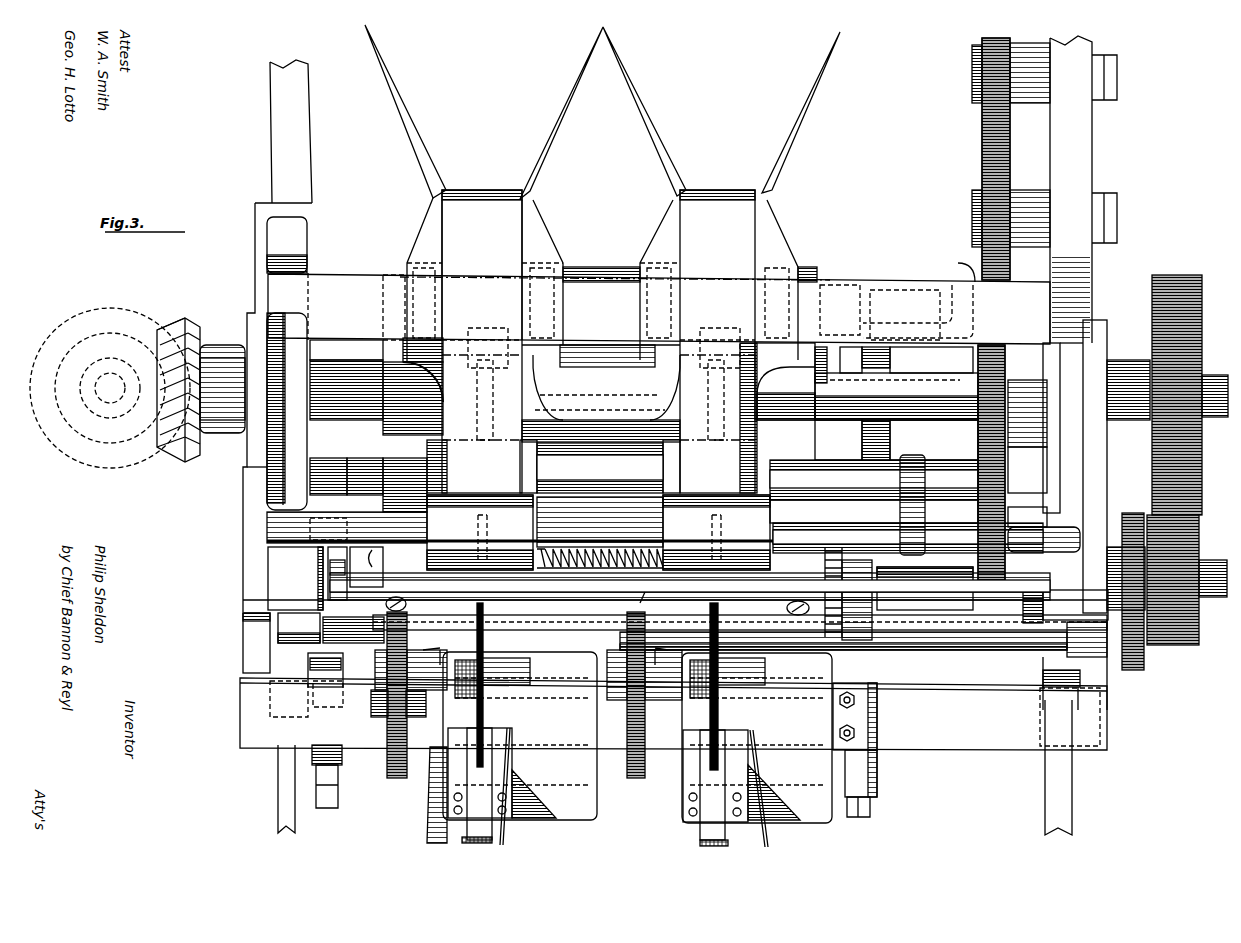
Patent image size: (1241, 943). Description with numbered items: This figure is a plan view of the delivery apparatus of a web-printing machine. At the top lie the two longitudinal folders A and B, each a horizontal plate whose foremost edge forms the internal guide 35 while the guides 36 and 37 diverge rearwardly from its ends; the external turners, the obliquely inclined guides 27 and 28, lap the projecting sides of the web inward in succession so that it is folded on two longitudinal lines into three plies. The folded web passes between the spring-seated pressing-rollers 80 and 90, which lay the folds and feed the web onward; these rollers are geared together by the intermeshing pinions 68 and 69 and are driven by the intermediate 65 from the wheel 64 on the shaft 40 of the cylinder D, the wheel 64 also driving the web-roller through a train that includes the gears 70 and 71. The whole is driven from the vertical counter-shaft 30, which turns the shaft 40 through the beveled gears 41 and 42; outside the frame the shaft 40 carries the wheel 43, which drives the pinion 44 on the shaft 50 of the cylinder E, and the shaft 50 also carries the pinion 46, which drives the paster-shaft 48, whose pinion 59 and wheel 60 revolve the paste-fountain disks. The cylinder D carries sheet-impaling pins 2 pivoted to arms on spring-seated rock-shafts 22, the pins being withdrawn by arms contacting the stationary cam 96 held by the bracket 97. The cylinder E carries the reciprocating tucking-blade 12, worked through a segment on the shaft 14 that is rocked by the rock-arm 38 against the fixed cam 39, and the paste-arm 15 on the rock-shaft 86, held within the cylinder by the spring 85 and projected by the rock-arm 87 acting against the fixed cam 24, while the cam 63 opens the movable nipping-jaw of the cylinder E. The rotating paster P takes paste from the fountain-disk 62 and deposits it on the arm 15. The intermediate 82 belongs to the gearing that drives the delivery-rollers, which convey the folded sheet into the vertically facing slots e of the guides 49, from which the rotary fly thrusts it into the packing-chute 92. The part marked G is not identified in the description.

The sheet-impaling pin 2 is at (480, 440).
The tucking-blade 12 is at (518, 600).
The shaft 14 is at (294, 650).
The paste receiving and applying arm 15 is at (487, 527).
The rock-shaft 22 is at (613, 345).
The fixed cam 24 is at (328, 558).
The guide 27 is at (531, 316).
The guide 28 is at (668, 310).
The vertical counter-shaft 30 is at (110, 388).
The guide 35 is at (482, 190).
The guide 36 is at (409, 118).
The guide 37 is at (562, 108).
The rock-arm 38 is at (444, 240).
The fixed cam 39 is at (522, 237).
The shaft 40 is at (220, 345).
The beveled gear 41 is at (100, 310).
The beveled gear 42 is at (172, 320).
The wheel 43 is at (1170, 275).
The pinion 44 is at (1175, 645).
The pinion 46 is at (1128, 513).
The paster-shaft 48 is at (1130, 665).
The guide 49 is at (525, 630).
The shaft 50 is at (925, 588).
The pinion 59 is at (387, 650).
The wheel 60 is at (397, 778).
The fountain-disk 62 is at (483, 720).
The cam 63 is at (857, 600).
The wheel 64 is at (995, 348).
The intermediate 65 is at (978, 432).
The pinion 68 is at (1027, 436).
The pinion 69 is at (1044, 528).
The gear 70 is at (982, 174).
The gear 71 is at (982, 125).
The pressing-roller 80 is at (537, 473).
The intermediate 82 is at (844, 592).
The spring 85 is at (612, 548).
The rock-shaft 86 is at (388, 566).
The rock-arm 87 is at (333, 574).
The pressing-roller 90 is at (598, 532).
The packing-chute 92 is at (505, 838).
The cam 96 is at (896, 440).
The bracket 97 is at (957, 263).
The longitudinal folder A is at (396, 171).
The longitudinal folder B is at (803, 169).
The cylinder D is at (601, 393).
The cylinder E is at (594, 580).
The bar G is at (645, 590).
The rotating paster P is at (590, 686).
The slot e is at (545, 653).